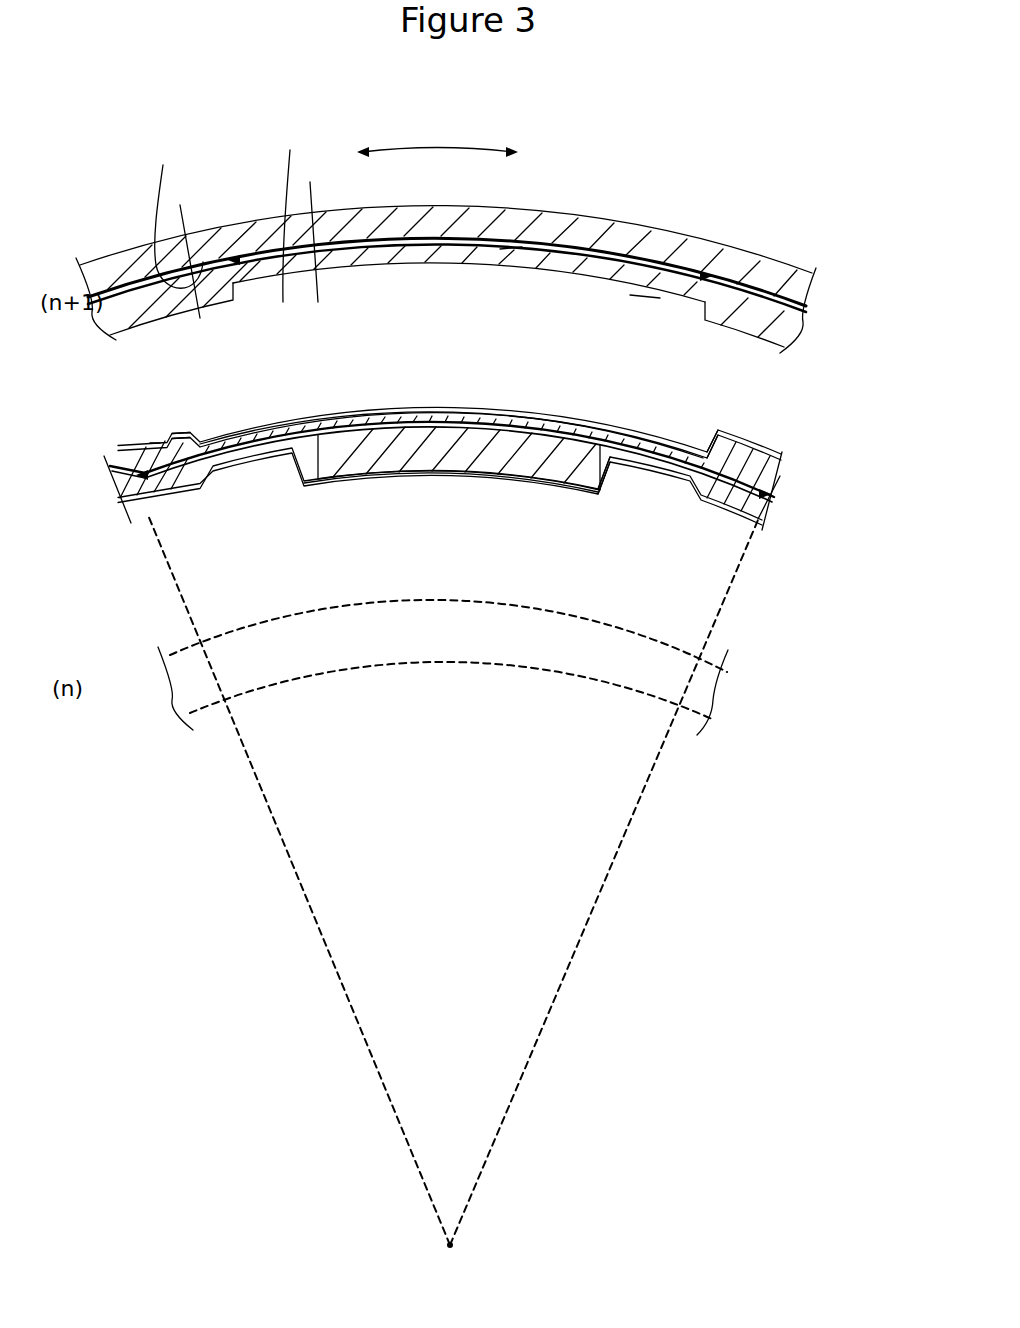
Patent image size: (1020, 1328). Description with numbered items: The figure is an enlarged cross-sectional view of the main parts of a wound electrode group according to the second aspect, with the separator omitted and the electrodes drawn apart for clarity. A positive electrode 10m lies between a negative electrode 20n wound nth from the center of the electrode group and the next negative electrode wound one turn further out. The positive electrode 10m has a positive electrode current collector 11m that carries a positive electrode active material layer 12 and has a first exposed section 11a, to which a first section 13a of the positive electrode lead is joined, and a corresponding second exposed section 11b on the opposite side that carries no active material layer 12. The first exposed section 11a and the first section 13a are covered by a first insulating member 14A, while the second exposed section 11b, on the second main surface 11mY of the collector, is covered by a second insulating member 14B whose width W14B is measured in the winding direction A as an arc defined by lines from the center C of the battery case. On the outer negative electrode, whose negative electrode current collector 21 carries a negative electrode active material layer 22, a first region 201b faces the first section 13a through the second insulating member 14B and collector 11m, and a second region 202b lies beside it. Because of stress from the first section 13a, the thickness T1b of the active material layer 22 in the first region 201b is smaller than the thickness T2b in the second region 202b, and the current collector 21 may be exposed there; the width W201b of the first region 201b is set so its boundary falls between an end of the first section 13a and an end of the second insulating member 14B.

The positive electrode 10m is at (511, 443).
The positive electrode current collector 11m is at (784, 486).
The positive electrode active material layer 12 is at (778, 458).
The first section of the positive electrode lead 13a is at (440, 463).
The first insulating member 14A is at (598, 480).
The second insulating member 14B is at (736, 438).
The first exposed section 11a is at (687, 503).
The second exposed section 11b is at (451, 396).
The second main surface of the positive electrode current collector 11mY is at (185, 431).
The width of the second insulating member W14B is at (157, 443).
The negative electrode wound nth 20n is at (713, 687).
The negative electrode current collector 21 is at (790, 309).
The negative electrode active material layer 22 is at (458, 295).
The first region 201b is at (691, 310).
The second region 202b is at (233, 312).
The thickness of the negative electrode active material layer in the first region T1b is at (293, 211).
The thickness of the negative electrode active material layer in the second region T2b is at (172, 229).
The width of the first region W201b is at (510, 248).
The winding direction A is at (437, 136).
The center of the battery case C is at (453, 887).